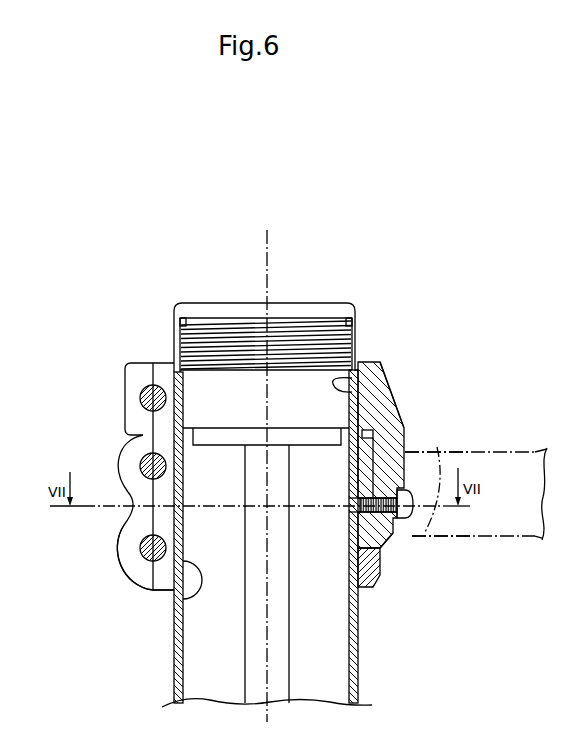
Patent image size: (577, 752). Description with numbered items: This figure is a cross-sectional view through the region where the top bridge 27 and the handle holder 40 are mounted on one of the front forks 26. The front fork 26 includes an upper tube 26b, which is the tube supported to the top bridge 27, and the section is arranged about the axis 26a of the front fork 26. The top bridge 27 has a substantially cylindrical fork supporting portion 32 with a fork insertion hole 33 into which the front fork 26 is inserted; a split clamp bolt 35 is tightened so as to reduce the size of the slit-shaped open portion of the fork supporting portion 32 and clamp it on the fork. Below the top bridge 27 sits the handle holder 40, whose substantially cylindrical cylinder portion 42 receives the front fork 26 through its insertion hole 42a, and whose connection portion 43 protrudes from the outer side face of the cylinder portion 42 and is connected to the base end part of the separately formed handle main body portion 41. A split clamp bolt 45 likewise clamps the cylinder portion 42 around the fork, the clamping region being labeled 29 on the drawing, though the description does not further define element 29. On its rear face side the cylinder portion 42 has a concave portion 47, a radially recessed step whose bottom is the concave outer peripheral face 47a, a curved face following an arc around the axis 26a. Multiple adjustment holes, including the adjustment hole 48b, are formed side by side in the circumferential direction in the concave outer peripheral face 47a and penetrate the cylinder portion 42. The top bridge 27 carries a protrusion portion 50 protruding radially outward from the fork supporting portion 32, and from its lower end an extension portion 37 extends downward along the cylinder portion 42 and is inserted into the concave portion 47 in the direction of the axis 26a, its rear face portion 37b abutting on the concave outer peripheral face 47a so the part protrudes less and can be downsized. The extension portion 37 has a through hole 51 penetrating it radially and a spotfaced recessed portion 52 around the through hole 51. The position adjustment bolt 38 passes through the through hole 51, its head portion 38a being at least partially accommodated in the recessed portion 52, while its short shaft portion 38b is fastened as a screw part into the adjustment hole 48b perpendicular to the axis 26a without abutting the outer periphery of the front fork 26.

The front fork 26 is at (359, 316).
The axis of the front fork 26a is at (271, 257).
The upper tube 26b is at (360, 668).
The top bridge 27 is at (163, 358).
The mounting portion 29 is at (118, 548).
The fork supporting portion 32 is at (392, 388).
The fork insertion hole 33 is at (353, 352).
The split clamp bolt 35 is at (145, 395).
The extension portion 37 is at (404, 437).
The rear face portion 37b is at (400, 397).
The position adjustment bolt 38 is at (418, 511).
The head portion 38a is at (406, 460).
The shaft portion 38b is at (406, 435).
The handle holder 40 is at (158, 574).
The handle main body portion 41 is at (527, 447).
The cylinder portion 42 is at (133, 572).
The insertion hole 42a is at (200, 594).
The connection portion 43 is at (437, 447).
The split clamp bolt 45 is at (142, 462).
The concave portion 47 is at (389, 528).
The concave outer peripheral face 47a is at (381, 537).
The adjustment hole 48b is at (357, 508).
The protrusion portion 50 is at (369, 430).
The through hole 51 is at (399, 521).
The recessed portion 52 is at (413, 519).